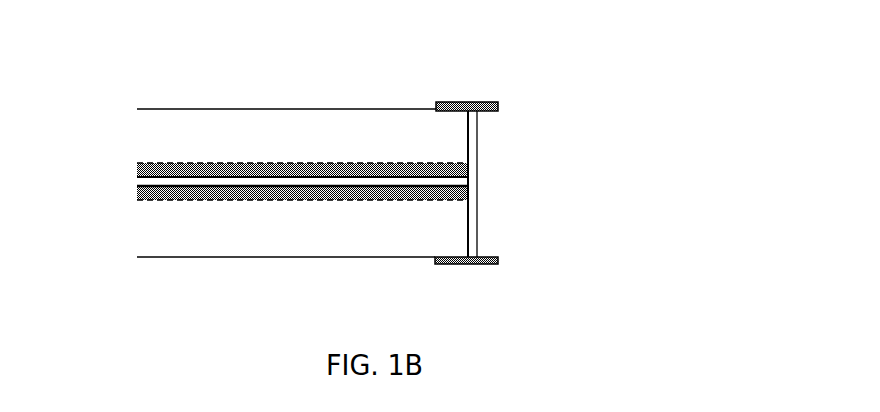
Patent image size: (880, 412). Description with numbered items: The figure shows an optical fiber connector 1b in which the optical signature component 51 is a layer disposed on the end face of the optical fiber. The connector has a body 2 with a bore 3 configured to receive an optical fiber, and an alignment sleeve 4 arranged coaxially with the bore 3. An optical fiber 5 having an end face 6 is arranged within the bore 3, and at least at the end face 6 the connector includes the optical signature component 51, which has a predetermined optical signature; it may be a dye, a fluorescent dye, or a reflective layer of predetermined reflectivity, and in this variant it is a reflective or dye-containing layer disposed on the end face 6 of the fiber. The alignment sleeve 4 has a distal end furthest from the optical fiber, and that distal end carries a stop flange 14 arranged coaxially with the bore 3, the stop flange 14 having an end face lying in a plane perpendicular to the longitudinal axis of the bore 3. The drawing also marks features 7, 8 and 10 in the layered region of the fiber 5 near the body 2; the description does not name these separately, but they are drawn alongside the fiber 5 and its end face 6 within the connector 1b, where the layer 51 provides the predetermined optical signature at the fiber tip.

The optical fiber connector 1b is at (289, 80).
The body 2 is at (153, 235).
The bore 3 is at (233, 200).
The alignment sleeve 4 is at (485, 265).
The optical fiber 5 is at (273, 247).
The end face 6 is at (471, 180).
The intermediate layer 7 is at (293, 183).
The second layer 8 is at (355, 193).
The measurement path 10 is at (199, 161).
The stop flange 14 is at (517, 253).
The optical signature component 51 is at (475, 213).